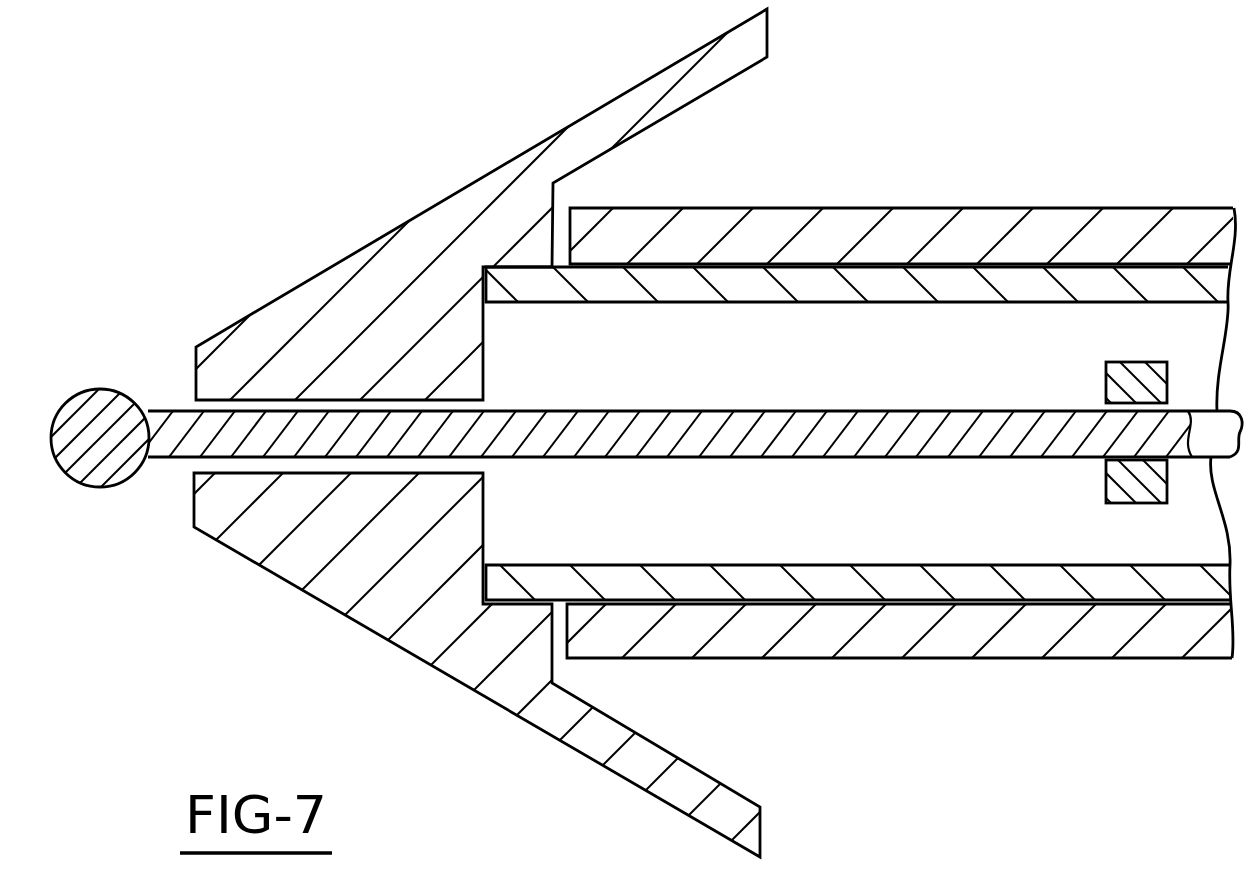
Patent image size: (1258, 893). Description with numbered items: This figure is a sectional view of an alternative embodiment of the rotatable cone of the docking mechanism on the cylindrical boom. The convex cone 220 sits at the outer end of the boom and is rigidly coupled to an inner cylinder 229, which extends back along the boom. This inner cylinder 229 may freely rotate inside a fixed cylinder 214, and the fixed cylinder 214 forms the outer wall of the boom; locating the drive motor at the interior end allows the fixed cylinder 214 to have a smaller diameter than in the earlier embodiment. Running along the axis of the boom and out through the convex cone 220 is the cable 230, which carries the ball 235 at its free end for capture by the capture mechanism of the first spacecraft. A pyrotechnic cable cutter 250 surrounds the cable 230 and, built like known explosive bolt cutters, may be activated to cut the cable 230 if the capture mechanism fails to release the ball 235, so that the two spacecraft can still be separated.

The fixed cylinder 214 is at (1022, 658).
The convex cone 220 is at (288, 582).
The inner cylinder 229 is at (907, 564).
The cable 230 is at (173, 412).
The ball 235 is at (100, 387).
The pyrotechnic cable cutter 250 is at (1124, 362).